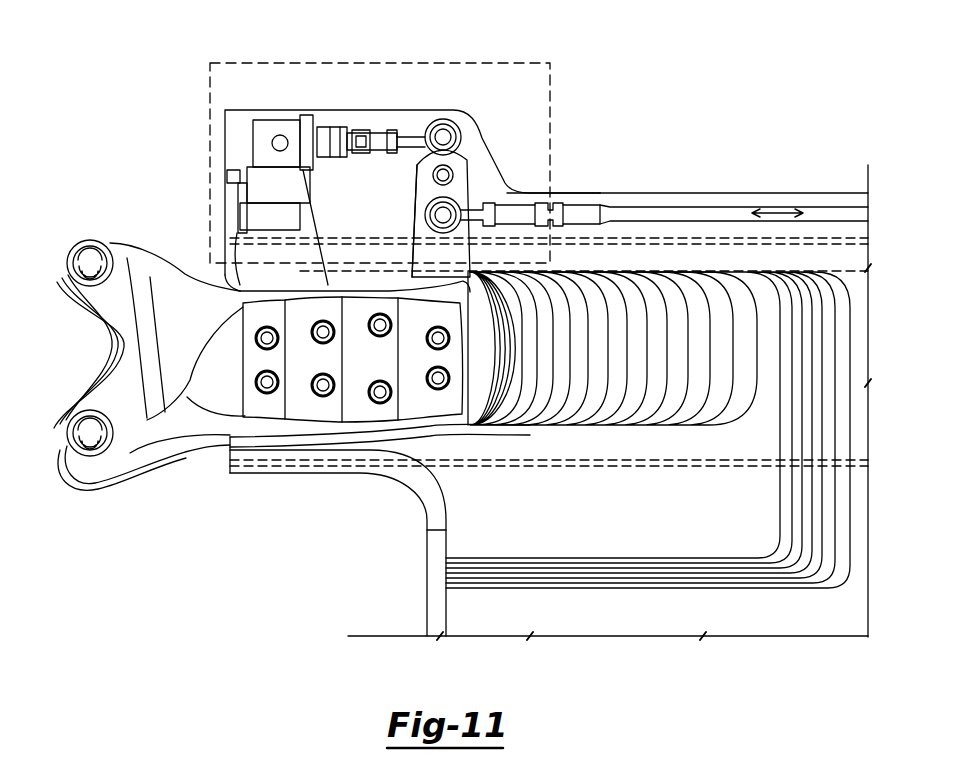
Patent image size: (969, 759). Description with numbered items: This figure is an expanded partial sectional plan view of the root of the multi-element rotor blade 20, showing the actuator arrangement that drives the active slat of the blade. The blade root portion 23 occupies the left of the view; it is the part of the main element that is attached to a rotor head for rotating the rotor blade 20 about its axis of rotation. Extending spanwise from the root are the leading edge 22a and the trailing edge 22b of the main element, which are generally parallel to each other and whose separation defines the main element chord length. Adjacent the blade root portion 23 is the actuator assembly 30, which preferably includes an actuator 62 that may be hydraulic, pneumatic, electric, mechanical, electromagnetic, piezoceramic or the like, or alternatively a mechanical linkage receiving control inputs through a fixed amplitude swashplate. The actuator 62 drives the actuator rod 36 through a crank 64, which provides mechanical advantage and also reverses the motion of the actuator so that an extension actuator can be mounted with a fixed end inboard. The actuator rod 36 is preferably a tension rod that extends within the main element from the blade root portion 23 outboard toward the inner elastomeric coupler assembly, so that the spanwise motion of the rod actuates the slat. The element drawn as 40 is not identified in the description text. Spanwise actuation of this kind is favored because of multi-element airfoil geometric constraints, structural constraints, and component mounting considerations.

The multi-element rotor blade 20 is at (660, 133).
The leading edge 22a is at (765, 191).
The trailing edge 22b is at (757, 637).
The blade root portion 23 is at (113, 388).
The actuator assembly 30 is at (508, 63).
The actuator rod 36 is at (693, 207).
The coil spring 40 is at (760, 444).
The actuator 62 is at (306, 117).
The crank 64 is at (470, 150).